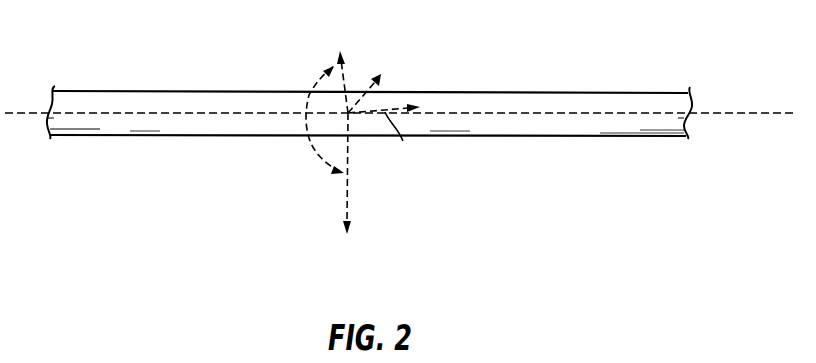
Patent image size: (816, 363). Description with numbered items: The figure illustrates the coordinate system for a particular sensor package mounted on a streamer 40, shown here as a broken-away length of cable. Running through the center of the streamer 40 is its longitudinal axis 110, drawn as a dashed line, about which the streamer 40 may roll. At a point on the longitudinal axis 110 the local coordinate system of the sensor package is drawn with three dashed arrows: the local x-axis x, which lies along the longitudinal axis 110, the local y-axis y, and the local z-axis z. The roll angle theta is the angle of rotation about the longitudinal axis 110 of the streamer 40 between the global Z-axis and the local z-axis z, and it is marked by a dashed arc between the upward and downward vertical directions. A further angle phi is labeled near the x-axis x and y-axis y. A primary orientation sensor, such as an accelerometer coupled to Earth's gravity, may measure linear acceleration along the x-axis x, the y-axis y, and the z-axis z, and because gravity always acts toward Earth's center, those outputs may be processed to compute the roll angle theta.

The streamer 40 is at (623, 92).
The longitudinal axis 110 is at (728, 115).
The local x-axis x is at (391, 107).
The local y-axis y is at (372, 81).
The local z-axis z is at (341, 144).
The roll angle theta is at (313, 152).
The azimuthal angle phi is at (398, 143).